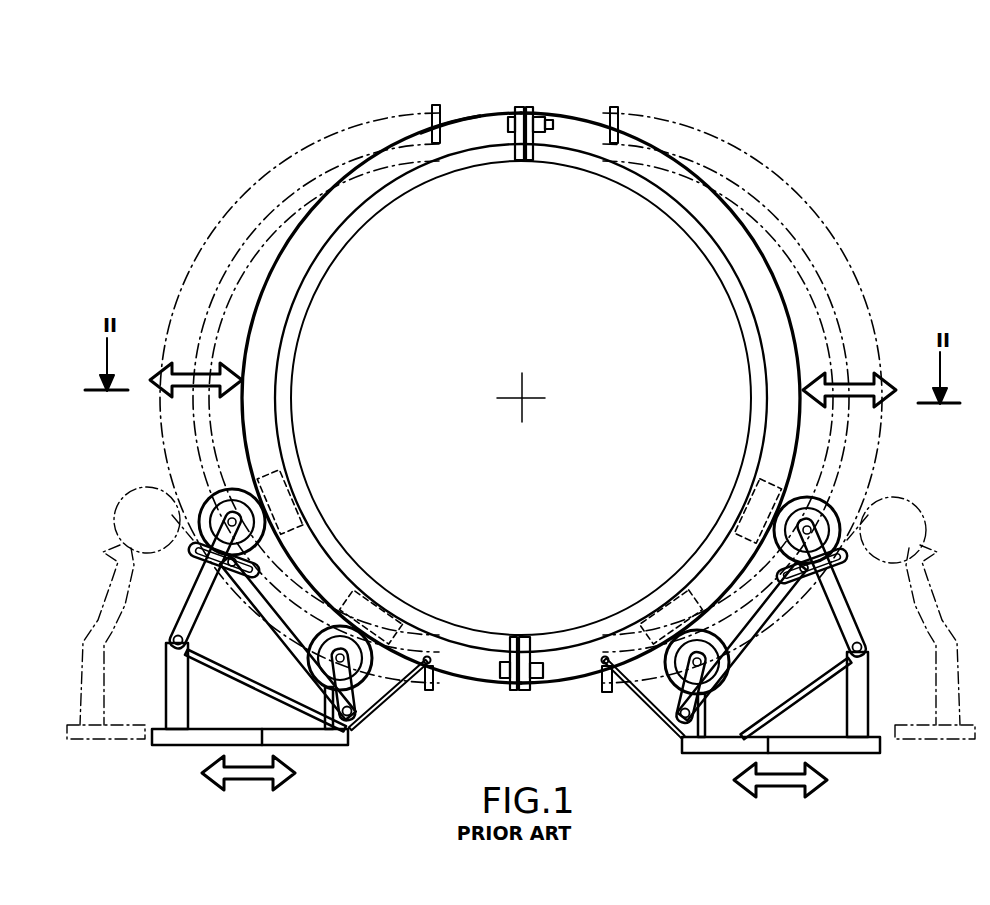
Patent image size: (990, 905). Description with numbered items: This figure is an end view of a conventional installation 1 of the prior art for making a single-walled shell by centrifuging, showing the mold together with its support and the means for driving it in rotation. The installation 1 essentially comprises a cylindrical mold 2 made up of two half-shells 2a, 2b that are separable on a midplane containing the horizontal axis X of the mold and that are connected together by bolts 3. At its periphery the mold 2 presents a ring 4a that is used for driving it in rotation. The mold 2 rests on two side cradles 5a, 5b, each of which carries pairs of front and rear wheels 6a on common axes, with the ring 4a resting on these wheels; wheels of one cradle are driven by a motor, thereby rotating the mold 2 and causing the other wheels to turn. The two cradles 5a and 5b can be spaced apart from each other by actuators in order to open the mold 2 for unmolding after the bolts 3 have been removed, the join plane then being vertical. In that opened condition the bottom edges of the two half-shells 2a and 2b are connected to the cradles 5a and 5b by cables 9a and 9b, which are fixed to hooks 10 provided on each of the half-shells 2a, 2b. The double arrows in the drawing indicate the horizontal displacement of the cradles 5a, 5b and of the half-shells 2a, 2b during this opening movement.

The installation 1 is at (794, 120).
The cylindrical mold 2 is at (674, 234).
The half-shell 2a is at (762, 374).
The half-shell 2b is at (292, 376).
The bolts 3 is at (576, 120).
The ring 4a is at (481, 125).
The side cradle 5a is at (168, 742).
The side cradle 5b is at (864, 754).
The front wheels 6a is at (236, 488).
The cable 9a is at (385, 700).
The cable 9b is at (648, 706).
The hooks 10 is at (437, 668).
The horizontal axis X is at (524, 396).